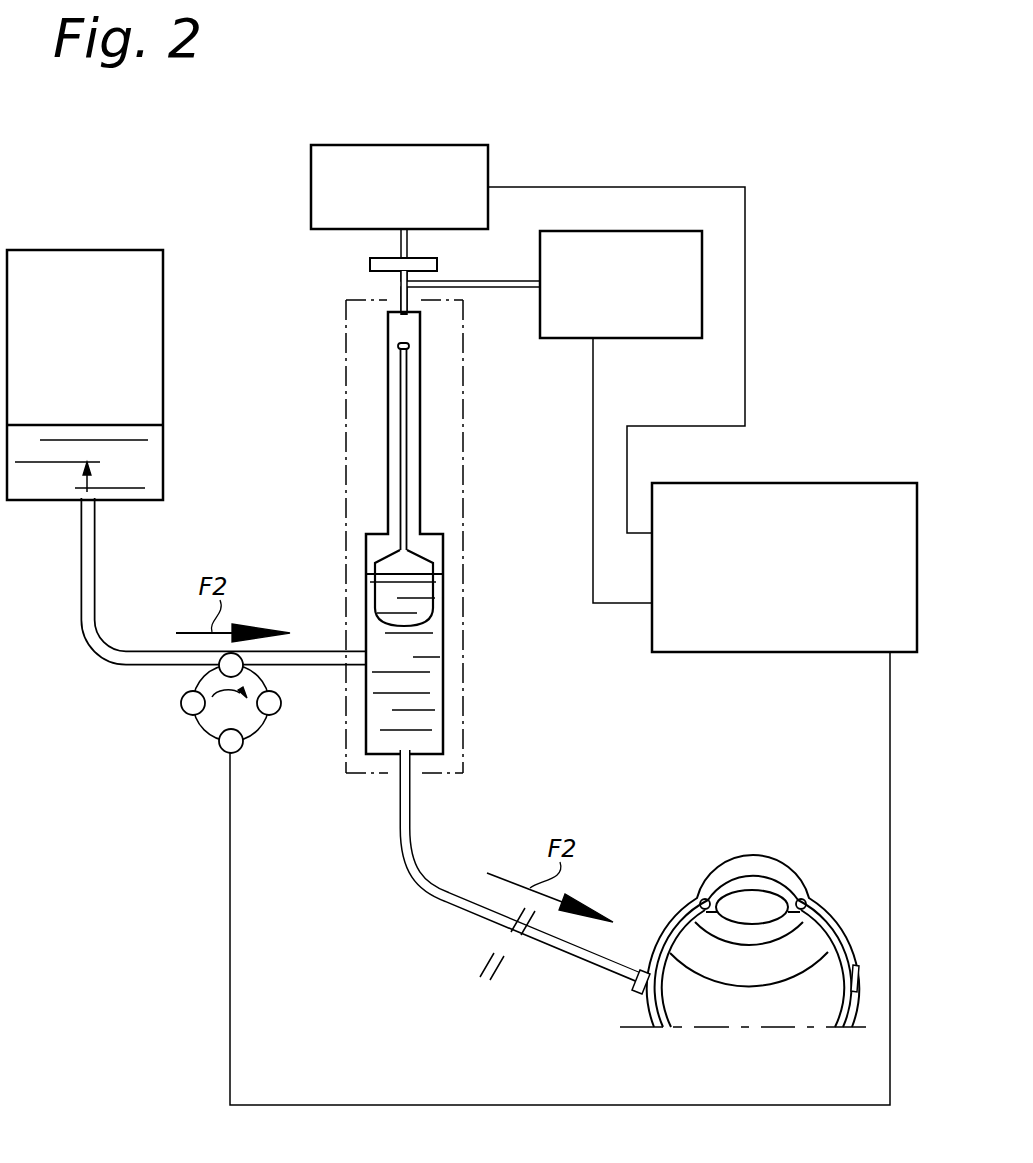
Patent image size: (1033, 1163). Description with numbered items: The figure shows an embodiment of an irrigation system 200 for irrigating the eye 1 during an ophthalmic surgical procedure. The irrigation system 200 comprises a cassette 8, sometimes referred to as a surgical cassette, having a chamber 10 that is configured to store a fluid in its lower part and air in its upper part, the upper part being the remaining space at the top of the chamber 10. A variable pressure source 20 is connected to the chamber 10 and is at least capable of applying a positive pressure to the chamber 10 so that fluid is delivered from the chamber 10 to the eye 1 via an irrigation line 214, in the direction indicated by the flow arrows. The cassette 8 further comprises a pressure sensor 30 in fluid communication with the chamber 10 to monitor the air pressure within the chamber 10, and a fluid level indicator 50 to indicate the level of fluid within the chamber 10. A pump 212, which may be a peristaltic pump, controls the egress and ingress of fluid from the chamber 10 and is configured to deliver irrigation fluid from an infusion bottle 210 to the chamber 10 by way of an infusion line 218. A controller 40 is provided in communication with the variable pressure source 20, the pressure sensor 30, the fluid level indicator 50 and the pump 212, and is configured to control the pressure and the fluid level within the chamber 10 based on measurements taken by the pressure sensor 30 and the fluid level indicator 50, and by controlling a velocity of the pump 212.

The irrigation system 200 is at (229, 259).
The infusion bottle 210 is at (135, 350).
The infusion line 218 is at (100, 657).
The pump 212 is at (254, 730).
The variable pressure source 20 is at (401, 157).
The pressure sensor 30 is at (676, 285).
The controller 40 is at (838, 508).
The fluid level indicator 50 is at (493, 455).
The cassette 8 is at (463, 707).
The chamber 10 is at (368, 630).
The irrigation line 214 is at (447, 898).
The eye 1 is at (818, 910).